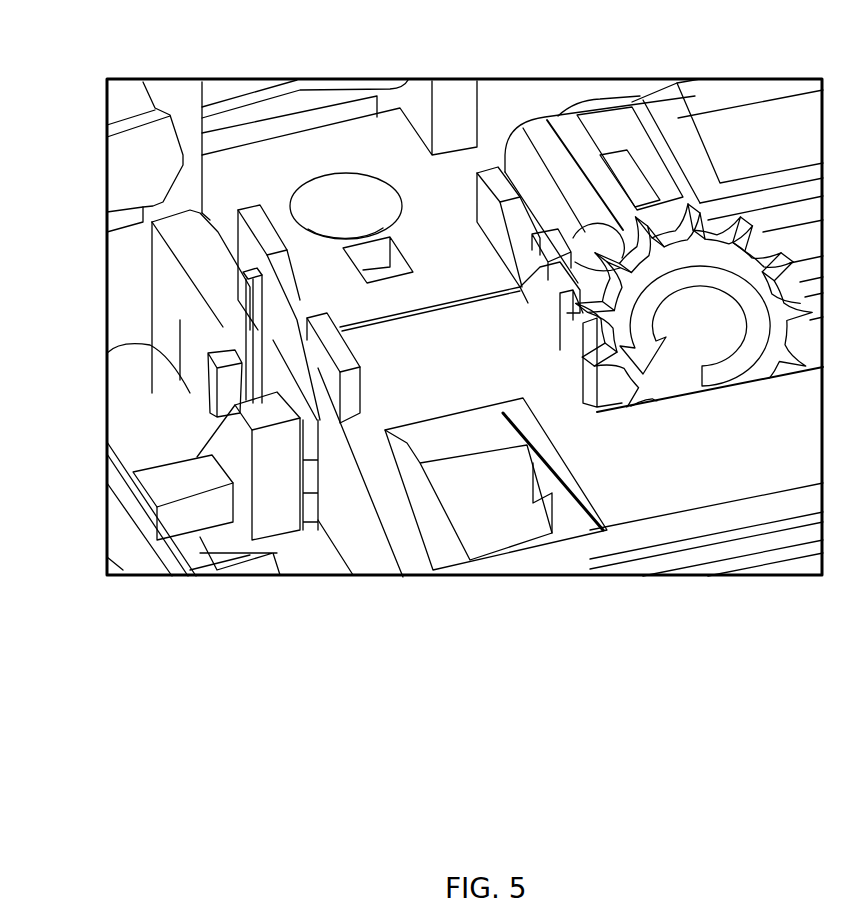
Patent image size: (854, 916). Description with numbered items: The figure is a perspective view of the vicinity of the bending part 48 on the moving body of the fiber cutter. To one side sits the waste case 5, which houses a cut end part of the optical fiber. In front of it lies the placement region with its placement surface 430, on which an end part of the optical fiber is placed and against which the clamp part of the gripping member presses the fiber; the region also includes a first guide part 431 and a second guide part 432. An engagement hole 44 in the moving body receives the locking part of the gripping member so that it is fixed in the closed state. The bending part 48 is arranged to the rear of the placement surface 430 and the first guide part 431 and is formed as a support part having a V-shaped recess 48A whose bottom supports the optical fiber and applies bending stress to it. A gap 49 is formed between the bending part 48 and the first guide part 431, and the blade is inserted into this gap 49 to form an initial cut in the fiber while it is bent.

The waste case 5 is at (760, 130).
The placement surface 430 is at (390, 303).
The first guide part 431 is at (317, 363).
The second guide part 432 is at (545, 298).
The engagement hole 44 is at (578, 508).
The bending part 48 is at (240, 347).
The recess 48A is at (245, 322).
The gap 49 is at (273, 373).